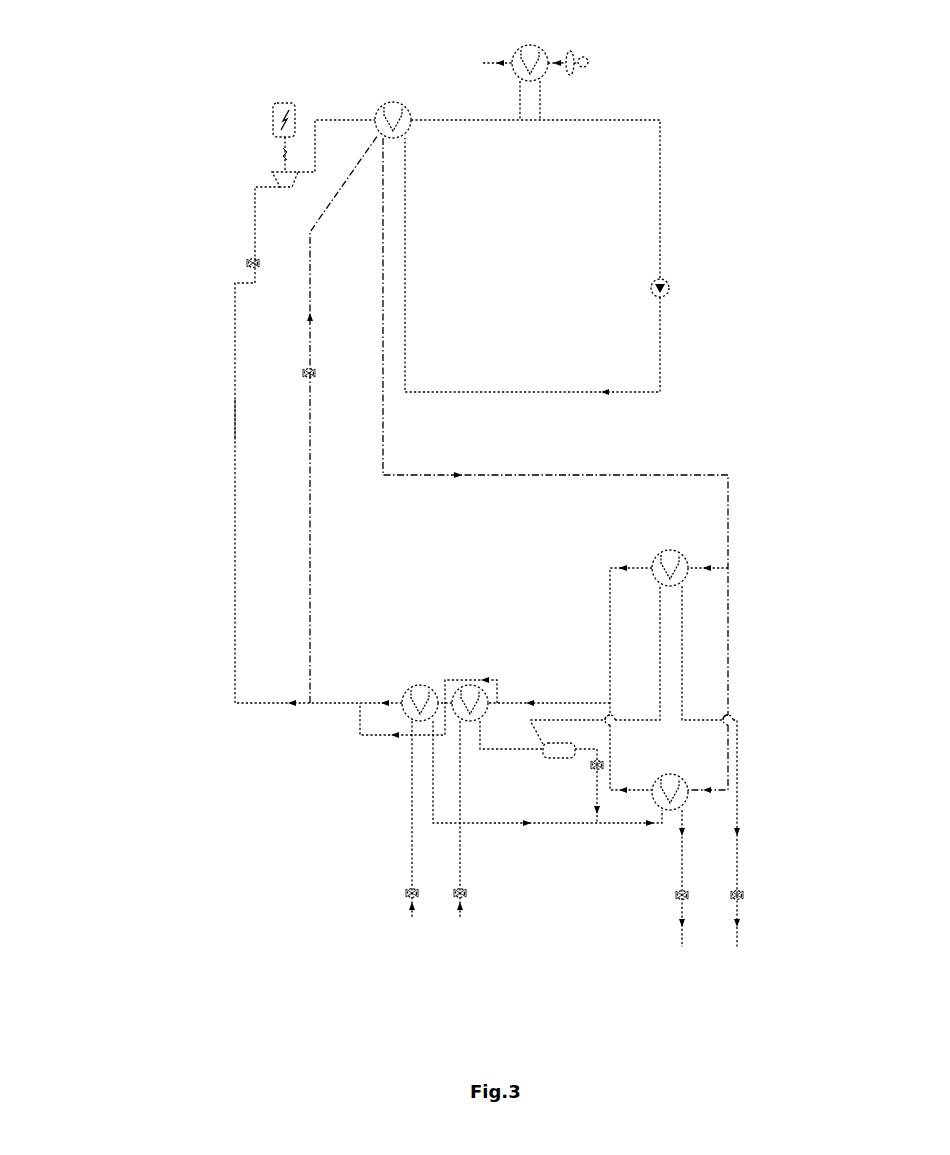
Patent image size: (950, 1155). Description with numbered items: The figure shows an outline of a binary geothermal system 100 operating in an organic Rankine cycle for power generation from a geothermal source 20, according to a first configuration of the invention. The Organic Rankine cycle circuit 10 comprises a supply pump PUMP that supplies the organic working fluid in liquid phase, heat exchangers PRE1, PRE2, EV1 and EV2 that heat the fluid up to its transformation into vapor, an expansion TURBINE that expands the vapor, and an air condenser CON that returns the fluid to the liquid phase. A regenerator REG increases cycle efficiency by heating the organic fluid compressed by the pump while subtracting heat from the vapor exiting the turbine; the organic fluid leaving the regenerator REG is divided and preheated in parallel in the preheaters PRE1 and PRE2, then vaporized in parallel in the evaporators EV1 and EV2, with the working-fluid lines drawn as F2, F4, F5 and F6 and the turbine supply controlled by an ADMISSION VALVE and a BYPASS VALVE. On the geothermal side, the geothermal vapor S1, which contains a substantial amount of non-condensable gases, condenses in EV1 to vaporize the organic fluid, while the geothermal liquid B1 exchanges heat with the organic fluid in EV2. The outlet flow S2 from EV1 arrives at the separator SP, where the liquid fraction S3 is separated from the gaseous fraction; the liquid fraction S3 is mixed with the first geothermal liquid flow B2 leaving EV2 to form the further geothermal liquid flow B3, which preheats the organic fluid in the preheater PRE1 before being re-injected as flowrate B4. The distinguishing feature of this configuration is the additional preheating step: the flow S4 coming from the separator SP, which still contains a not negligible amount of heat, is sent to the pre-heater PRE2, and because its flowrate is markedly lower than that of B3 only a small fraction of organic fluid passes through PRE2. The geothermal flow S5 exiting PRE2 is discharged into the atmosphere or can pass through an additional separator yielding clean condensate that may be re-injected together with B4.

The binary geothermal system 100 is at (196, 151).
The Organic Rankine cycle circuit 10 is at (208, 419).
The geothermal source 20 is at (288, 754).
The working fluid line to turbine F6 is at (348, 120).
The working fluid line from evaporator F5 is at (346, 703).
The working fluid line to evaporator F4 is at (563, 703).
The working fluid line from pump F2 is at (565, 390).
The regenerator REG is at (412, 130).
The condenser CON is at (532, 45).
The supply pump PUMP is at (667, 283).
The expansion turbine TURBINE is at (270, 176).
The admission valve ADMISSION VALVE is at (237, 260).
The bypass valve BYPASS VALVE is at (292, 370).
The evaporator EV1 is at (470, 685).
The evaporator EV2 is at (421, 685).
The preheater PRE1 is at (690, 797).
The pre-heater PRE2 is at (690, 574).
The geothermal vapor S1 is at (457, 838).
The outlet flow S2 is at (478, 744).
The liquid fraction S3 is at (588, 690).
The flow from separator S4 is at (679, 708).
The geothermal flow S5 is at (742, 867).
The separator SP is at (545, 755).
The geothermal liquid B1 is at (408, 874).
The first geothermal liquid flow B2 is at (494, 826).
The further geothermal liquid flow B3 is at (605, 827).
The flowrate B4 is at (678, 853).